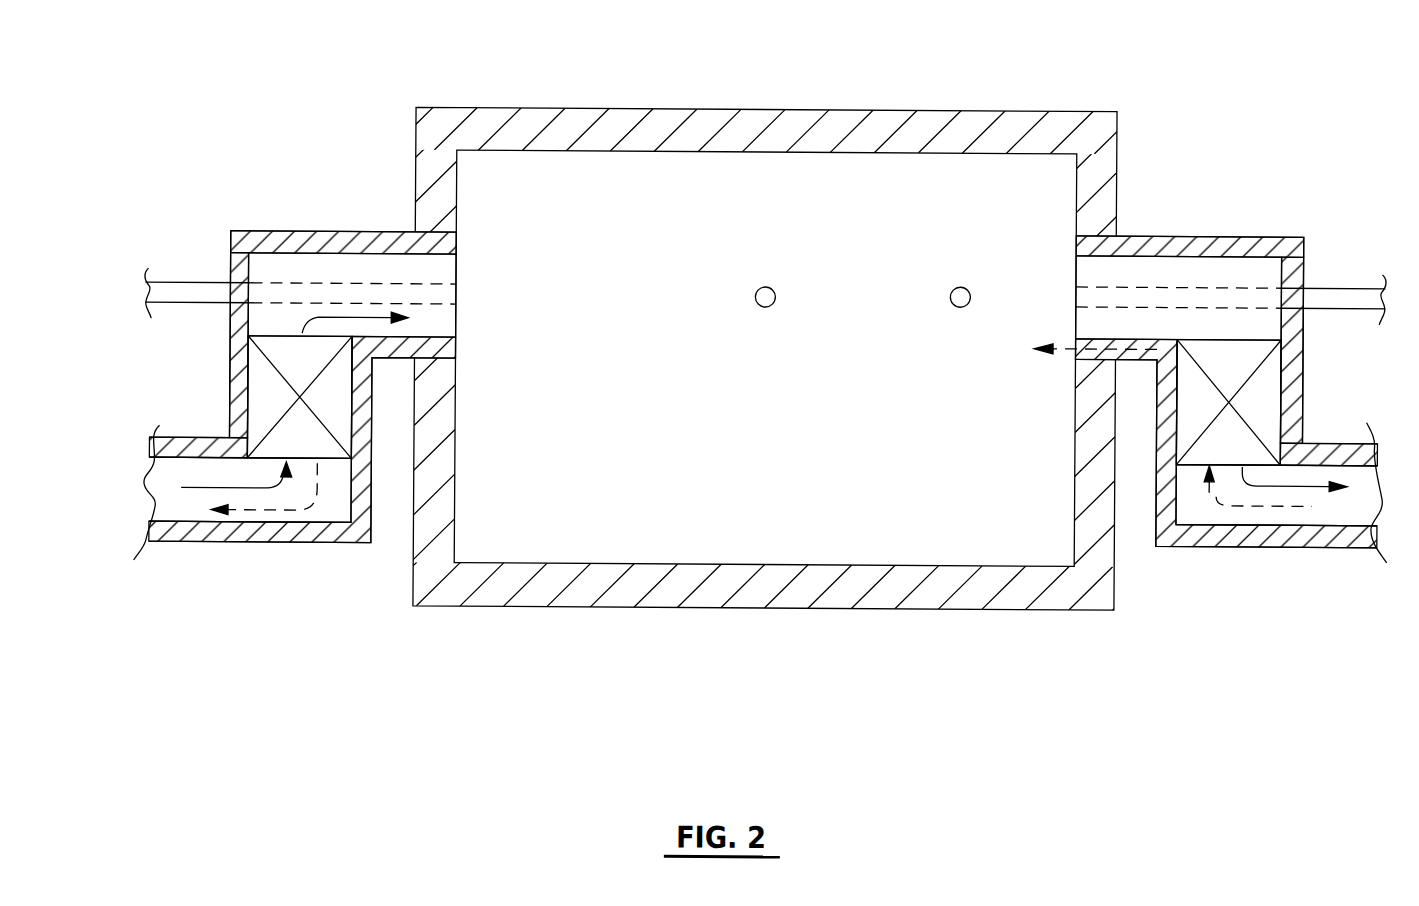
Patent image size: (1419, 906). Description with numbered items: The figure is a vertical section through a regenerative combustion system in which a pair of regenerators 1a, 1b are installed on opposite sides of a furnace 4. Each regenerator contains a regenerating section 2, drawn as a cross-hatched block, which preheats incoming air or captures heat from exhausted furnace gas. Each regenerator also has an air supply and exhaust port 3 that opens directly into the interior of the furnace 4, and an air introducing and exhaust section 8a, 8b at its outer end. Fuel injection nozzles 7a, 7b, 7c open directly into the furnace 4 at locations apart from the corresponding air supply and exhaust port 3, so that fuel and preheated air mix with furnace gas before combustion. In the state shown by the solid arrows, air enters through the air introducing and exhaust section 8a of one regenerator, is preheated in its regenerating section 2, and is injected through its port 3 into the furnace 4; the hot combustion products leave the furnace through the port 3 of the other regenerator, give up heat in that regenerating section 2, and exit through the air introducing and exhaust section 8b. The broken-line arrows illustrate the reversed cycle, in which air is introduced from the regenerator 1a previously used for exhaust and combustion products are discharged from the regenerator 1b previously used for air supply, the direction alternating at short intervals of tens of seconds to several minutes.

The regenerator 1a is at (230, 351).
The regenerator 1b is at (1230, 234).
The regenerating section 2 is at (270, 394).
The air supply and exhaust port 3 is at (456, 274).
The furnace 4 is at (1018, 110).
The fuel injection nozzle 7a is at (199, 286).
The fuel injection nozzle 7b is at (960, 286).
The fuel injection nozzle 7c is at (765, 287).
The air introducing and exhaust section 8a is at (183, 546).
The air introducing and exhaust section 8b is at (1298, 544).